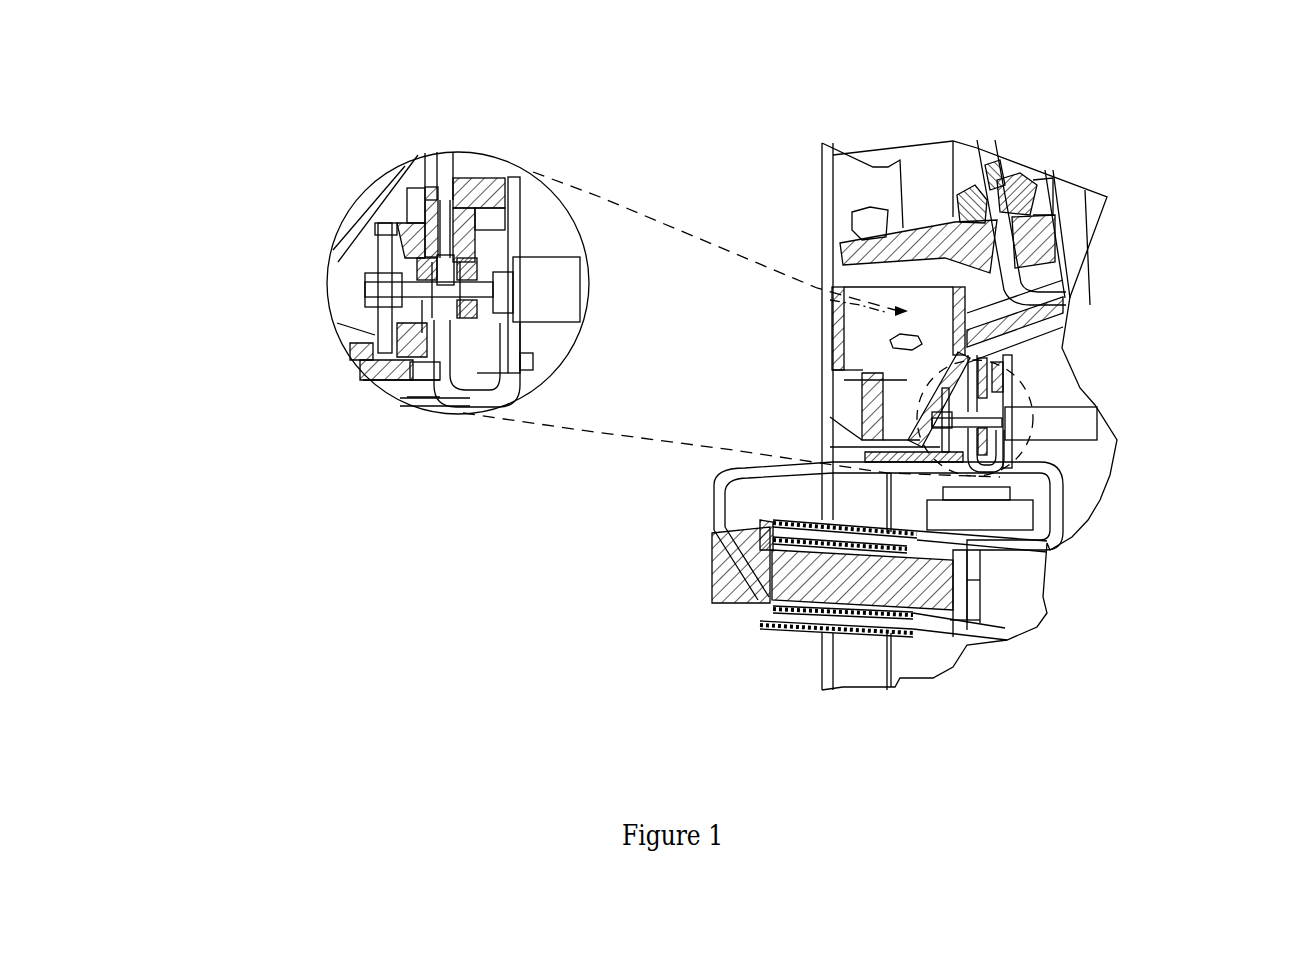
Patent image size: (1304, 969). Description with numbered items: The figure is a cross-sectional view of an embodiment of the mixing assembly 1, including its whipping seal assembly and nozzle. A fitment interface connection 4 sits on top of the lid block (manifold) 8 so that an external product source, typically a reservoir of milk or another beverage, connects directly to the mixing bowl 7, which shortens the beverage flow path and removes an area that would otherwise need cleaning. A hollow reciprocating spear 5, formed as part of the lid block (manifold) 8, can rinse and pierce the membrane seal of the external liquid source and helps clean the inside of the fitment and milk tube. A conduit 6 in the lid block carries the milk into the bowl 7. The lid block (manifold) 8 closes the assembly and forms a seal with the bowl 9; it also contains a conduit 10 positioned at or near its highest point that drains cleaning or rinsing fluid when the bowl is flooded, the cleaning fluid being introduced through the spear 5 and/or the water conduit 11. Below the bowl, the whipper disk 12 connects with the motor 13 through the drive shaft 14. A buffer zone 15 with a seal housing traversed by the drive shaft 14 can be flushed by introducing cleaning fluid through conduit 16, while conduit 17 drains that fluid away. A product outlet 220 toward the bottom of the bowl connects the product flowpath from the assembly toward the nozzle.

The mixing assembly 1 is at (1133, 280).
The fitment interface connection 4 is at (1050, 174).
The hollow reciprocating spear 5 is at (1035, 215).
The conduit 6 is at (1000, 272).
The mixing bowl 7 is at (845, 298).
The lid block (manifold) 8 is at (866, 238).
The bowl 9 is at (912, 377).
The conduit 10 is at (827, 198).
The water conduit 11 is at (1060, 348).
The whipper disk 12 is at (1250, 482).
The motor 13 is at (1073, 425).
The drive shaft 14 is at (1205, 357).
The buffer zone 15 is at (445, 282).
The conduit 16 is at (443, 172).
The conduit 17 is at (463, 410).
The product outlet 220 is at (865, 445).